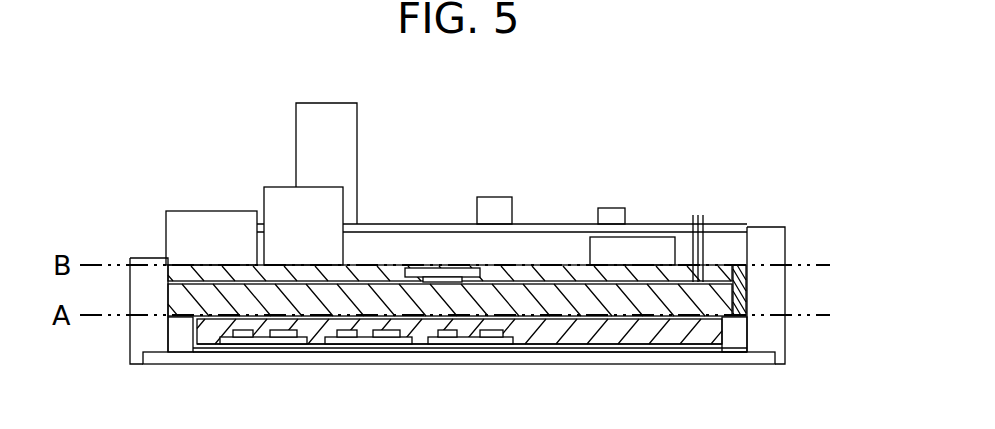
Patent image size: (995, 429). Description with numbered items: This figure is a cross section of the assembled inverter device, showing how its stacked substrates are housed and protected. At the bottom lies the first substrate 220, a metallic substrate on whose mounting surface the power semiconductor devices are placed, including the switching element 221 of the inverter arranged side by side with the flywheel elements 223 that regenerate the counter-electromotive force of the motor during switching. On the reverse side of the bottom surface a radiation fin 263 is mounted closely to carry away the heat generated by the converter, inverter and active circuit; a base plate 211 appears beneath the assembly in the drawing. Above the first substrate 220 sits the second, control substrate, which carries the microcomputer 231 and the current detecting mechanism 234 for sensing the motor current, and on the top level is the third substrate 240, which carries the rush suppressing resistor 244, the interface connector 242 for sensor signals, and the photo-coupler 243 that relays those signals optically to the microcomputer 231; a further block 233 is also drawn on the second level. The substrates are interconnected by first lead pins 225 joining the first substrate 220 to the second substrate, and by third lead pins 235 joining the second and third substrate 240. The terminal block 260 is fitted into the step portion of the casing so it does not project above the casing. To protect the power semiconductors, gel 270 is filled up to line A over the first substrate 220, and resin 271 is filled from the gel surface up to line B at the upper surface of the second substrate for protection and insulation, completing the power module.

The substrate base plate 211 is at (788, 333).
The radiation fin 263 is at (183, 358).
The terminal block 260 is at (207, 210).
The current detecting mechanism 234 is at (277, 187).
The rush suppressing resistor 244 is at (358, 148).
The third substrate 240 is at (737, 222).
The photo-coupler 243 is at (495, 197).
The interface connector 242 is at (613, 208).
The lower block 233 is at (665, 237).
The third lead pins 235 is at (705, 218).
The first substrate 220 is at (547, 280).
The microcomputer 231 is at (430, 267).
The first lead pins 225 is at (738, 292).
The resin 271 is at (668, 303).
The switching element 221 is at (395, 338).
The flywheel elements 223 is at (343, 333).
The gel 270 is at (627, 337).